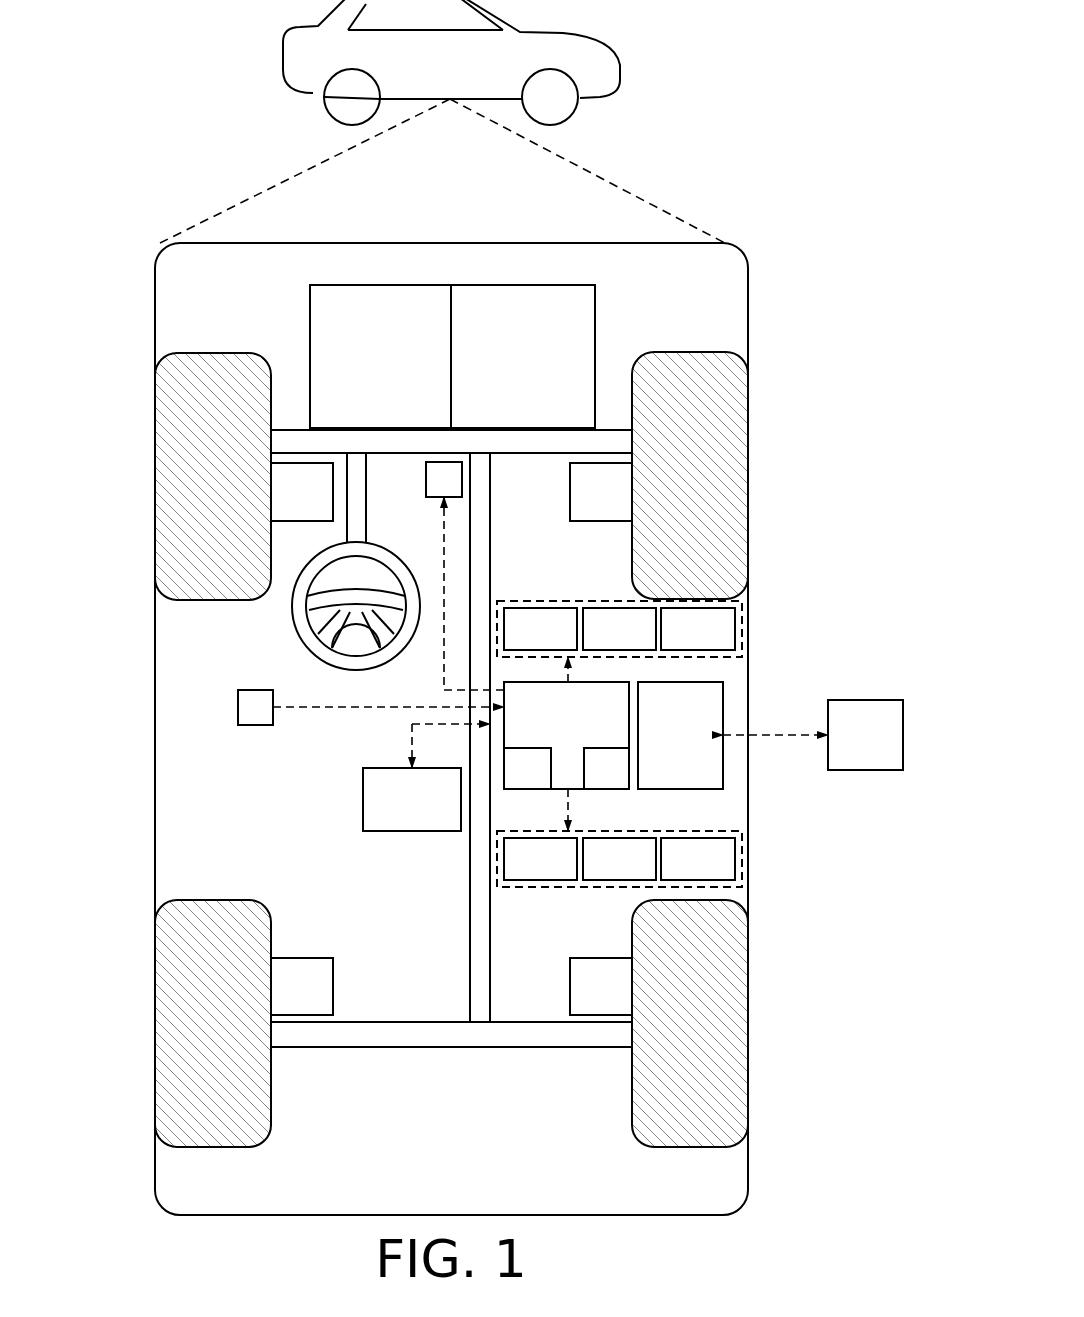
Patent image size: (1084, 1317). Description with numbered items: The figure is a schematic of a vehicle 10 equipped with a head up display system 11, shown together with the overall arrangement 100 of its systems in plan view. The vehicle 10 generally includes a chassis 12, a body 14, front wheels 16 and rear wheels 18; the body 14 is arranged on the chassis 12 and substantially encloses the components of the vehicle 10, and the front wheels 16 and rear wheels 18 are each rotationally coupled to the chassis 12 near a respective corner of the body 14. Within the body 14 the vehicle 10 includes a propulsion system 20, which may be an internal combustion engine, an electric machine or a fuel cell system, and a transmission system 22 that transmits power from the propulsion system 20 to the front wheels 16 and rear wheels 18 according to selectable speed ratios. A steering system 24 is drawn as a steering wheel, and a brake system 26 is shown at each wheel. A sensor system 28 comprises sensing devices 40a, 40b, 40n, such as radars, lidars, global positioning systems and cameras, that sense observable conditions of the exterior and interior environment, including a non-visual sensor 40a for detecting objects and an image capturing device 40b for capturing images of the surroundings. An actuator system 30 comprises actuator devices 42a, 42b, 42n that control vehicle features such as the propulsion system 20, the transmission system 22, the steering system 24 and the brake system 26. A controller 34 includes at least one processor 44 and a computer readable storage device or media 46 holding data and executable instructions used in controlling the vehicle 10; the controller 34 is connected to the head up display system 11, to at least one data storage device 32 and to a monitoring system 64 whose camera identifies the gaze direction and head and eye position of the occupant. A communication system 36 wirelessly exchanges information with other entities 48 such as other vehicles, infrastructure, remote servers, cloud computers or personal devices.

The vehicle 10 is at (437, 74).
The vehicle system 100 is at (737, 222).
The body 14 is at (155, 730).
The front wheels 16 is at (213, 353).
The rear wheels 18 is at (213, 1147).
The propulsion system 20 is at (367, 369).
The transmission system 22 is at (510, 369).
The chassis 12 is at (470, 932).
The steering system 24 is at (372, 488).
The head up display (HUD) system 11 is at (433, 492).
The brake system 26 is at (289, 504).
The monitoring system 64 is at (243, 719).
The data storage device 32 is at (399, 812).
The controller 34 is at (554, 727).
The processor 44 is at (514, 782).
The computer readable storage device or media 46 is at (593, 782).
The communication system 36 is at (667, 747).
The other entities 48 is at (852, 747).
The sensor system 28 is at (585, 601).
The sensing device 40a is at (521, 641).
The sensing device 40b is at (600, 641).
The sensing device 40n is at (679, 641).
The actuator system 30 is at (595, 887).
The actuator device 42a is at (521, 871).
The actuator device 42b is at (600, 871).
The actuator device 42n is at (679, 871).